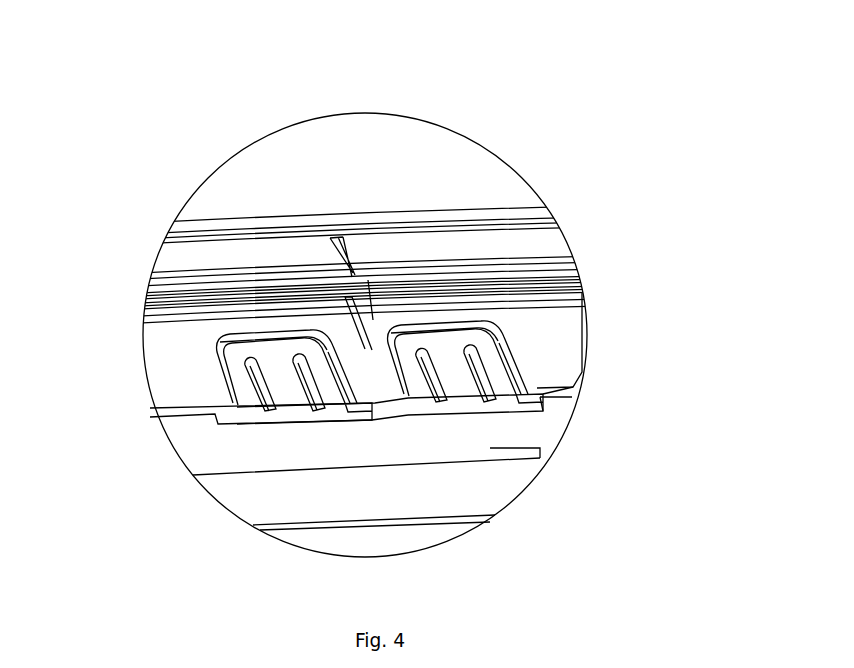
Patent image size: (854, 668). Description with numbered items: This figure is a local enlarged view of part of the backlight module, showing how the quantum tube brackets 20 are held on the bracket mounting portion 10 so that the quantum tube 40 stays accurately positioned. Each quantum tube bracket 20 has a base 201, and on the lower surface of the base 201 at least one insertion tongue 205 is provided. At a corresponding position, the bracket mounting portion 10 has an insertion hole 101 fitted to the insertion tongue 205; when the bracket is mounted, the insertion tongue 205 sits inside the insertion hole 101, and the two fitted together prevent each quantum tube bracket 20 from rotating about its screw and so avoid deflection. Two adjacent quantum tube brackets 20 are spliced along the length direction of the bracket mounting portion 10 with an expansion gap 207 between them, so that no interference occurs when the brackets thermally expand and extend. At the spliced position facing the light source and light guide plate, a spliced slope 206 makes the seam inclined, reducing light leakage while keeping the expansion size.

The bracket mounting portion 10 is at (490, 452).
The insertion hole 101 is at (490, 410).
The quantum tube bracket 20 is at (180, 373).
The base 201 is at (447, 350).
The insertion tongue 205 is at (470, 397).
The spliced slope 206 is at (333, 240).
The expansion gap 207 is at (365, 350).
The quantum tube 40 is at (268, 292).